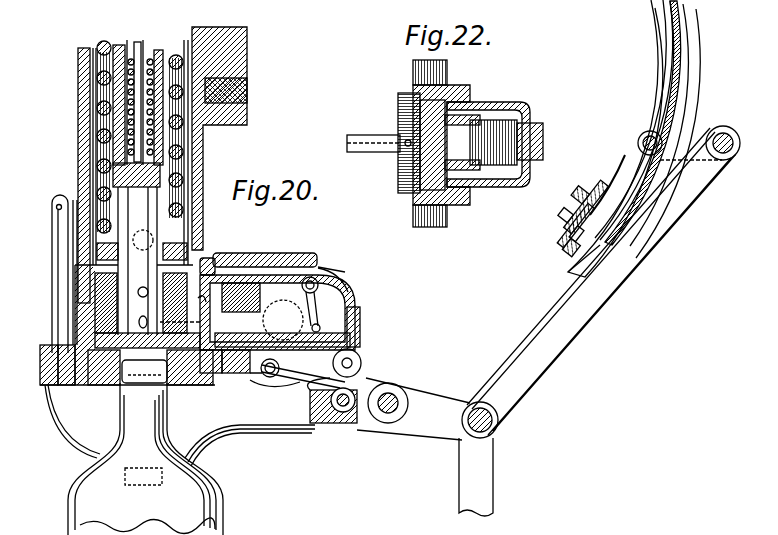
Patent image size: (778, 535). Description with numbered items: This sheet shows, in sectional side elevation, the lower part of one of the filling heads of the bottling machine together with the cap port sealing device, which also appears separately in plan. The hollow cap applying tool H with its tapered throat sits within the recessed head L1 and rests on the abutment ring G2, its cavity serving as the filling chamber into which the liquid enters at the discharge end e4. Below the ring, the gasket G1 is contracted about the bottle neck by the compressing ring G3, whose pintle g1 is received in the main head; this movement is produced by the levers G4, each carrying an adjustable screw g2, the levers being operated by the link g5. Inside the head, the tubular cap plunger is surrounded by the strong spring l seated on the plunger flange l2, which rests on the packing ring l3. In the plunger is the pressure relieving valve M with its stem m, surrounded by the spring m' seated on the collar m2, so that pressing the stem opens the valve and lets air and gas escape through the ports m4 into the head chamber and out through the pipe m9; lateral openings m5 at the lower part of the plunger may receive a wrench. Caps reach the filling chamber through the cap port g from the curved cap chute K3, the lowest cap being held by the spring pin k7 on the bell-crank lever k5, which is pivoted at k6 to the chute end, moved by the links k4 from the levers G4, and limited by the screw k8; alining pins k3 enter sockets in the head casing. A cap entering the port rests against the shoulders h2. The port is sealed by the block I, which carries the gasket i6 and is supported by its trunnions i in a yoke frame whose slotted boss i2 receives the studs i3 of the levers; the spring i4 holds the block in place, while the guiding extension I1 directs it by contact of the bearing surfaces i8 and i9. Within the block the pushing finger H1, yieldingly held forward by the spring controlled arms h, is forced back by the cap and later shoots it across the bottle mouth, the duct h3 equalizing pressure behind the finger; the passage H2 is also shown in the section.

In FIG. 20, the stem m is at (140, 91).
In FIG. 20, the spring m' is at (160, 89).
In FIG. 20, the spring l is at (98, 78).
In FIG. 20, the head L1 is at (80, 112).
In FIG. 20, the collar m2 is at (113, 146).
In FIG. 20, the ports m4 is at (113, 170).
In FIG. 20, the valve M is at (120, 180).
In FIG. 20, the pipe m9 is at (196, 226).
In FIG. 20, the pintle g1 is at (52, 256).
In FIG. 20, the packing ring l3 is at (73, 272).
In FIG. 20, the cap applying head or tool H is at (95, 286).
In FIG. 20, the lugs or shoulders h2 is at (152, 320).
In FIG. 20, the passage H2 is at (195, 325).
In FIG. 20, the cap port g is at (204, 306).
In FIG. 20, the abutment ring G2 is at (42, 352).
In FIG. 20, the compressing ring G3 is at (45, 367).
In FIG. 20, the gasket G1 is at (92, 386).
In FIG. 20, the discharge end e4 is at (144, 370).
In FIG. 20, the adjustable screw g2 is at (135, 378).
In FIG. 20, the lateral openings m5 is at (262, 256).
In FIG. 20, the plunger flange l2 is at (210, 258).
In FIG. 20, the block I is at (280, 305).
In FIG. 22, the block I is at (495, 138).
In FIG. 20, the guiding extension I1 is at (322, 266).
In FIG. 20, the bearing surface i8 is at (285, 258).
In FIG. 20, the bearing surface i9 is at (330, 266).
In FIG. 20, the spring controlled arms h is at (320, 300).
In FIG. 22, the spring controlled arms h is at (472, 116).
In FIG. 20, the gasket i6 is at (218, 374).
In FIG. 22, the gasket i6 is at (398, 165).
In FIG. 20, the duct h3 is at (242, 386).
In FIG. 20, the slotted boss i2 is at (362, 364).
In FIG. 20, the studs i3 is at (362, 352).
In FIG. 20, the spring i4 is at (312, 372).
In FIG. 20, the arms or levers G4 is at (250, 445).
In FIG. 20, the link g5 is at (427, 447).
In FIG. 20, the links k4 is at (603, 280).
In FIG. 20, the cap chute K3 is at (672, 97).
In FIG. 20, the pivot k6 is at (642, 135).
In FIG. 20, the bow or bell-crank lever k5 is at (640, 165).
In FIG. 20, the screw k8 is at (596, 186).
In FIG. 20, the spring pin k7 is at (565, 236).
In FIG. 20, the alining pins k3 is at (568, 272).
In FIG. 22, the pushing finger H1 is at (372, 135).
In FIG. 22, the trunnions i is at (440, 68).